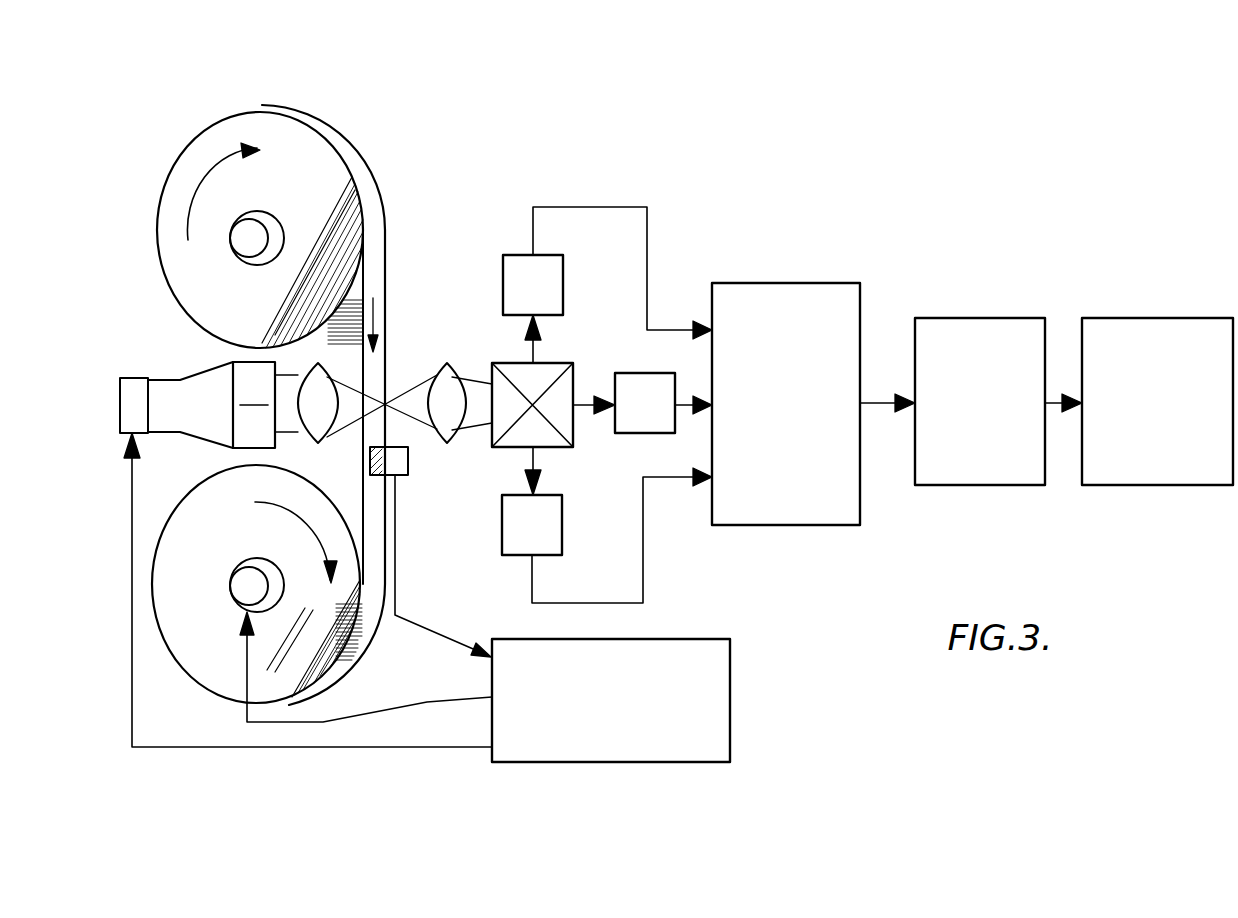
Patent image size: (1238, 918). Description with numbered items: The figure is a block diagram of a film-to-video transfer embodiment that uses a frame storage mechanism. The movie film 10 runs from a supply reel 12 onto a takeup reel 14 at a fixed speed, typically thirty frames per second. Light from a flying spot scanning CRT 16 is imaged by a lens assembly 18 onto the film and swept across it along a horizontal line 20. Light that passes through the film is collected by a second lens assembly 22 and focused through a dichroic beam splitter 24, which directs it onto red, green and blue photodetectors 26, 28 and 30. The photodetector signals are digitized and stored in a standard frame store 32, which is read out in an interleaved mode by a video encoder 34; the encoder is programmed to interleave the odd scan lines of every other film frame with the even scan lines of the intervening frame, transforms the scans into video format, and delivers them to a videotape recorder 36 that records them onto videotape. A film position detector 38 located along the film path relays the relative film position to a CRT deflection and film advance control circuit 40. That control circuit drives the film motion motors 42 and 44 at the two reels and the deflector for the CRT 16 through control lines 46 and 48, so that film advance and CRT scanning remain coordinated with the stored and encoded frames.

The movie film 10 is at (375, 252).
The supply reel 12 is at (217, 122).
The takeup reel 14 is at (198, 496).
The flying spot scanning CRT 16 is at (178, 368).
The lens assembly 18 is at (318, 364).
The horizontal line 20 is at (369, 403).
The lens assembly 22 is at (445, 365).
The dichroic beam splitter 24 is at (556, 448).
The red photodetector 26 is at (503, 283).
The green photodetector 28 is at (633, 373).
The blue photodetector 30 is at (502, 515).
The frame store 32 is at (795, 283).
The video encoder 34 is at (967, 318).
The videotape recorder 36 is at (1127, 318).
The film position detector 38 is at (408, 460).
The CRT deflection and film advance control circuit 40 is at (733, 681).
The film motion motor 42 is at (228, 243).
The film motion motor 44 is at (231, 584).
The control line 46 is at (425, 704).
The control line 48 is at (368, 748).